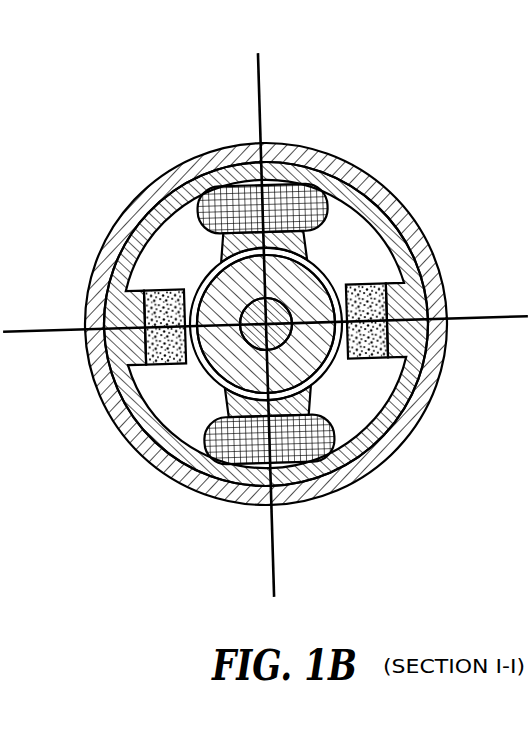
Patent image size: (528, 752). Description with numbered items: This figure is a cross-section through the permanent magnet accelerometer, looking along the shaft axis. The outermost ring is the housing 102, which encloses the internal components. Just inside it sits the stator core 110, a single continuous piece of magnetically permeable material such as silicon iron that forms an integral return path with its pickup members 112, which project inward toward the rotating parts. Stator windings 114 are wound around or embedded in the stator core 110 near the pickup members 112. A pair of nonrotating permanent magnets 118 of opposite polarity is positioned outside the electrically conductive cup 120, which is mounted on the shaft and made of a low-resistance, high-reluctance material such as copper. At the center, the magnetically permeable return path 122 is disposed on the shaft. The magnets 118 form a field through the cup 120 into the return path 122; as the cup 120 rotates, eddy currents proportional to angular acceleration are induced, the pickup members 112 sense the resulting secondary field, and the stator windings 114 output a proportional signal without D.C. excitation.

The housing 102 is at (140, 443).
The stator core 110 is at (307, 497).
The pickup members 112 is at (330, 276).
The stator windings 114 is at (286, 198).
The permanent magnets 118 is at (163, 290).
The electrically conductive cup 120 is at (303, 233).
The magnetically permeable return path 122 is at (296, 382).